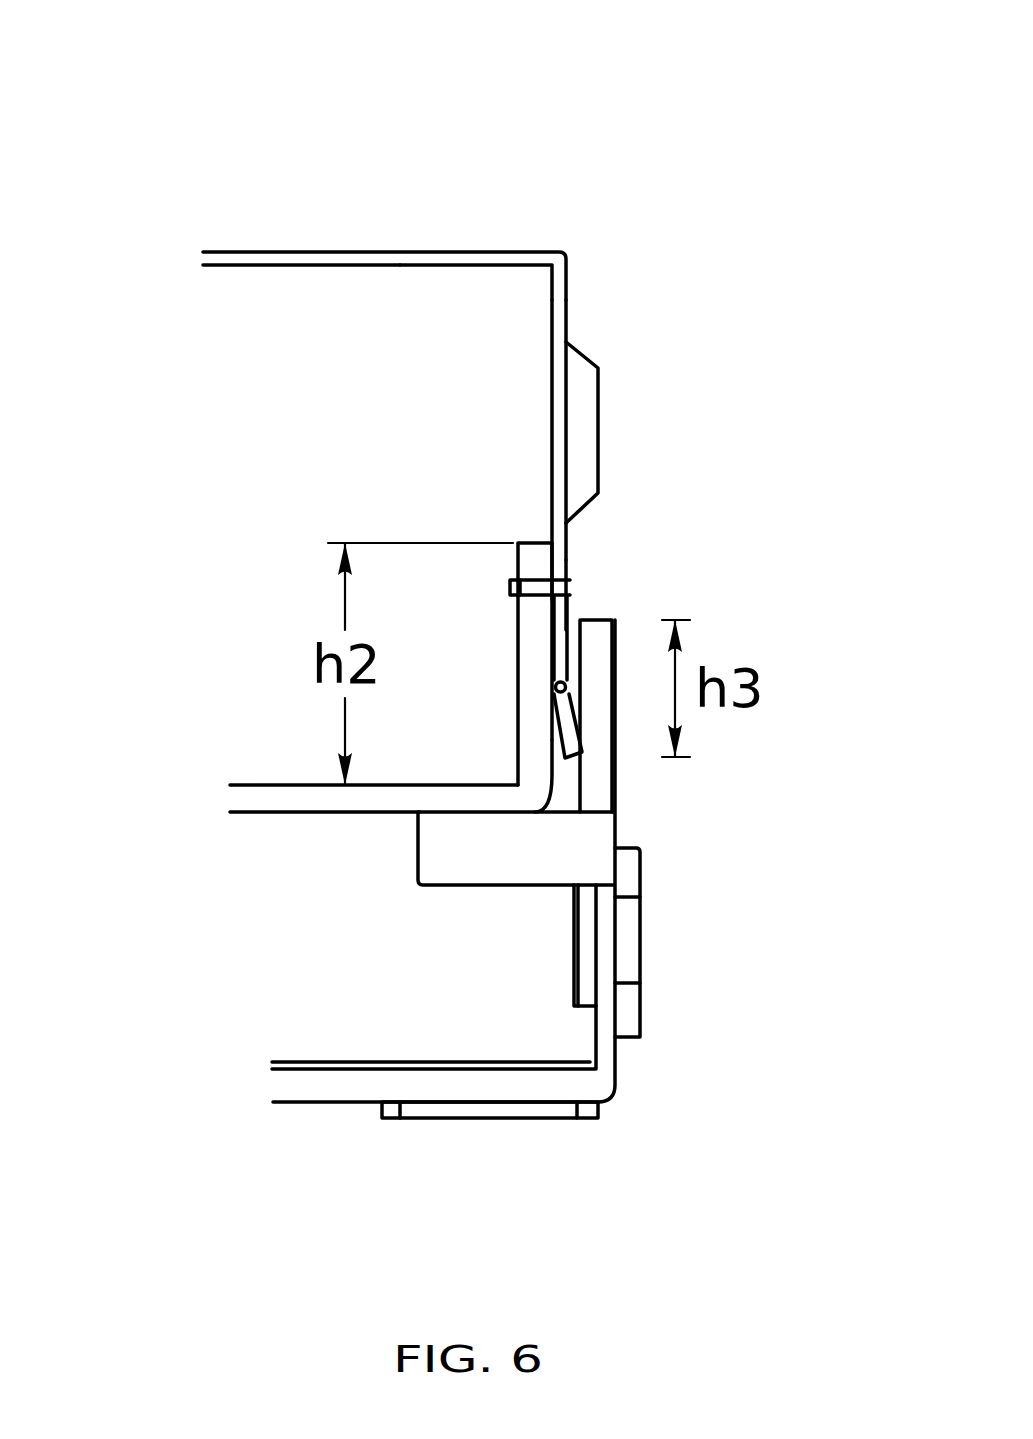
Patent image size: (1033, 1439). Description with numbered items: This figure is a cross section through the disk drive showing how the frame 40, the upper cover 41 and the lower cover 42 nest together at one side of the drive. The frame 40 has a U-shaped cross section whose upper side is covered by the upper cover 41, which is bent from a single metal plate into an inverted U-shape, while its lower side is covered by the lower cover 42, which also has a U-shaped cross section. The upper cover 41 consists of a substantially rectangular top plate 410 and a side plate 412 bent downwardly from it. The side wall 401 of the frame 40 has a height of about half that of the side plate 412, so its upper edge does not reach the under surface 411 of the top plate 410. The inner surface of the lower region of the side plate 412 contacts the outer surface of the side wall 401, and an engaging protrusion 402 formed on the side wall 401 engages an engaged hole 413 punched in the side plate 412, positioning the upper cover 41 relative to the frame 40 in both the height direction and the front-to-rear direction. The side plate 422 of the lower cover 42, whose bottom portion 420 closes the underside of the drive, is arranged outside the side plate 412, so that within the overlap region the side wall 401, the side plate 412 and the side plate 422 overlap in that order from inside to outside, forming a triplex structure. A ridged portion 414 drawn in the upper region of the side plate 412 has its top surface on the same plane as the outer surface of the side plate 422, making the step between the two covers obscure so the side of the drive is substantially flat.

The frame 40 is at (292, 772).
The upper cover 41 is at (485, 220).
The lower cover 42 is at (313, 1128).
The side wall 401 is at (520, 648).
The engaging protrusion 402 is at (573, 603).
The top plate 410 is at (278, 250).
The under surface 411 is at (450, 268).
The side plate 412 is at (567, 300).
The engaged hole 413 is at (567, 590).
The ridged portion 414 is at (600, 403).
The bottom plate portion 420 is at (265, 817).
The side plate 422 is at (613, 788).